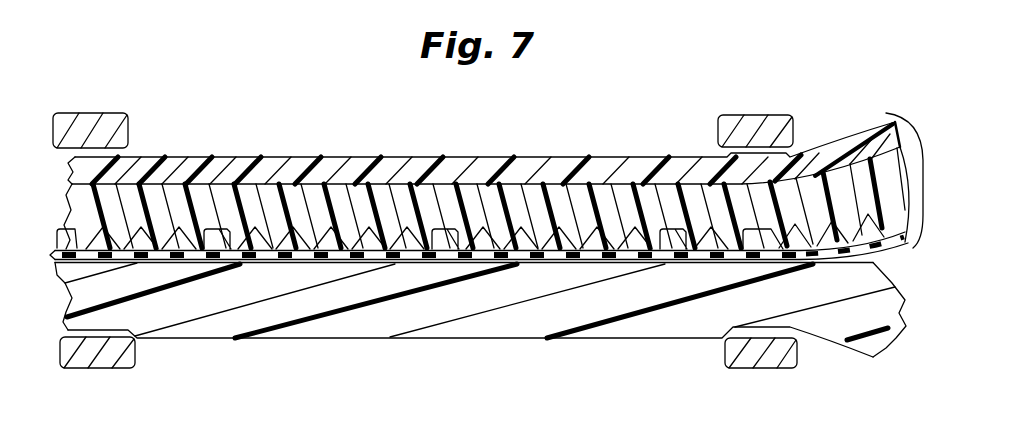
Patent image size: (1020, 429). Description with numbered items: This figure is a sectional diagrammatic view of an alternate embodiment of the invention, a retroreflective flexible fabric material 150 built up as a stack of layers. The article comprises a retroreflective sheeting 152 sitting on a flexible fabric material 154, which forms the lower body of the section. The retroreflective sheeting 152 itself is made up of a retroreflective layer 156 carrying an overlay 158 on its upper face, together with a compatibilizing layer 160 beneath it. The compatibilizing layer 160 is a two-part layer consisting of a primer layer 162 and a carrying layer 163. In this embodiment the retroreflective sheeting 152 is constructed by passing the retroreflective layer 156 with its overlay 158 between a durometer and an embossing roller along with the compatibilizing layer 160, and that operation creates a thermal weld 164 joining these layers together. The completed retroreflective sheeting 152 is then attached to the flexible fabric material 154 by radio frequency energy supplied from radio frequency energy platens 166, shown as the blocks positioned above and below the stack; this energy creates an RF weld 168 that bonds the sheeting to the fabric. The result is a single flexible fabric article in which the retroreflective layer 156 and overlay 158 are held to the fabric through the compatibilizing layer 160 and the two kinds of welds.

The retroreflective flexible fabric material 150 is at (312, 143).
The retroreflective sheeting 152 is at (886, 113).
The flexible fabric material 154 is at (462, 338).
The retroreflective layer 156 is at (478, 183).
The overlay 158 is at (567, 157).
The compatibilizing layer 160 is at (860, 256).
The primer layer 162 is at (818, 181).
The carrying layer 163 is at (913, 247).
The thermal weld 164 is at (434, 240).
The radio frequency energy platens 166 is at (720, 117).
The RF weld 168 is at (748, 227).